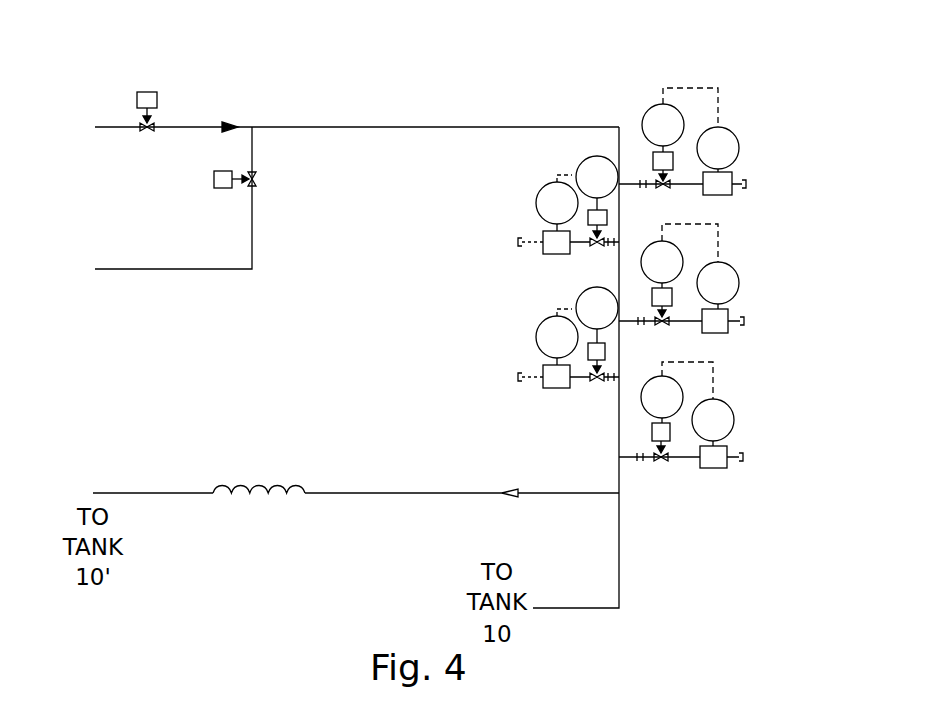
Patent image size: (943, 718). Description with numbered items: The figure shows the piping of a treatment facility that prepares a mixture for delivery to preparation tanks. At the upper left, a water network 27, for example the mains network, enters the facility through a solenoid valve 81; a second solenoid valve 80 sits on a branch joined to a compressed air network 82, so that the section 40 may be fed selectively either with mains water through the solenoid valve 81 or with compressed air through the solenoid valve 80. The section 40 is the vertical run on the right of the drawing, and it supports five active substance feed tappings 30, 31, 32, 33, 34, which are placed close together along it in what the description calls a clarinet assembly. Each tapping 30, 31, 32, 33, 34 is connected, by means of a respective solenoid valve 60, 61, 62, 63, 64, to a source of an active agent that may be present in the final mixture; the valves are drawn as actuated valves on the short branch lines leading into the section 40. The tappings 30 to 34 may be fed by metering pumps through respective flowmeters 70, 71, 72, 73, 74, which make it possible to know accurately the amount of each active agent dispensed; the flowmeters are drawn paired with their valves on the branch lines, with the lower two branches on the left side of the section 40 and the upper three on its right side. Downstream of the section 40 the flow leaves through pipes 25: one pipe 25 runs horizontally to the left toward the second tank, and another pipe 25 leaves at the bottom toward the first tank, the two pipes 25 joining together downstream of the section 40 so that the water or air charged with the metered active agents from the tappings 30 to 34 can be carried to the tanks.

The pipe 25 is at (400, 493).
The water network 27 is at (110, 128).
The active substance feed tapping 30 is at (628, 458).
The active substance feed tapping 31 is at (616, 385).
The active substance feed tapping 32 is at (626, 322).
The active substance feed tapping 33 is at (616, 250).
The active substance feed tapping 34 is at (626, 186).
The section 40 is at (615, 478).
The solenoid valve 60 is at (668, 433).
The solenoid valve 61 is at (588, 358).
The solenoid valve 62 is at (672, 298).
The solenoid valve 63 is at (588, 224).
The solenoid valve 64 is at (653, 162).
The flowmeter 70 is at (715, 468).
The flowmeter 71 is at (545, 388).
The flowmeter 72 is at (713, 330).
The flowmeter 73 is at (545, 253).
The flowmeter 74 is at (730, 178).
The solenoid valve 80 is at (258, 184).
The solenoid valve 81 is at (150, 90).
The compressed air network 82 is at (165, 270).